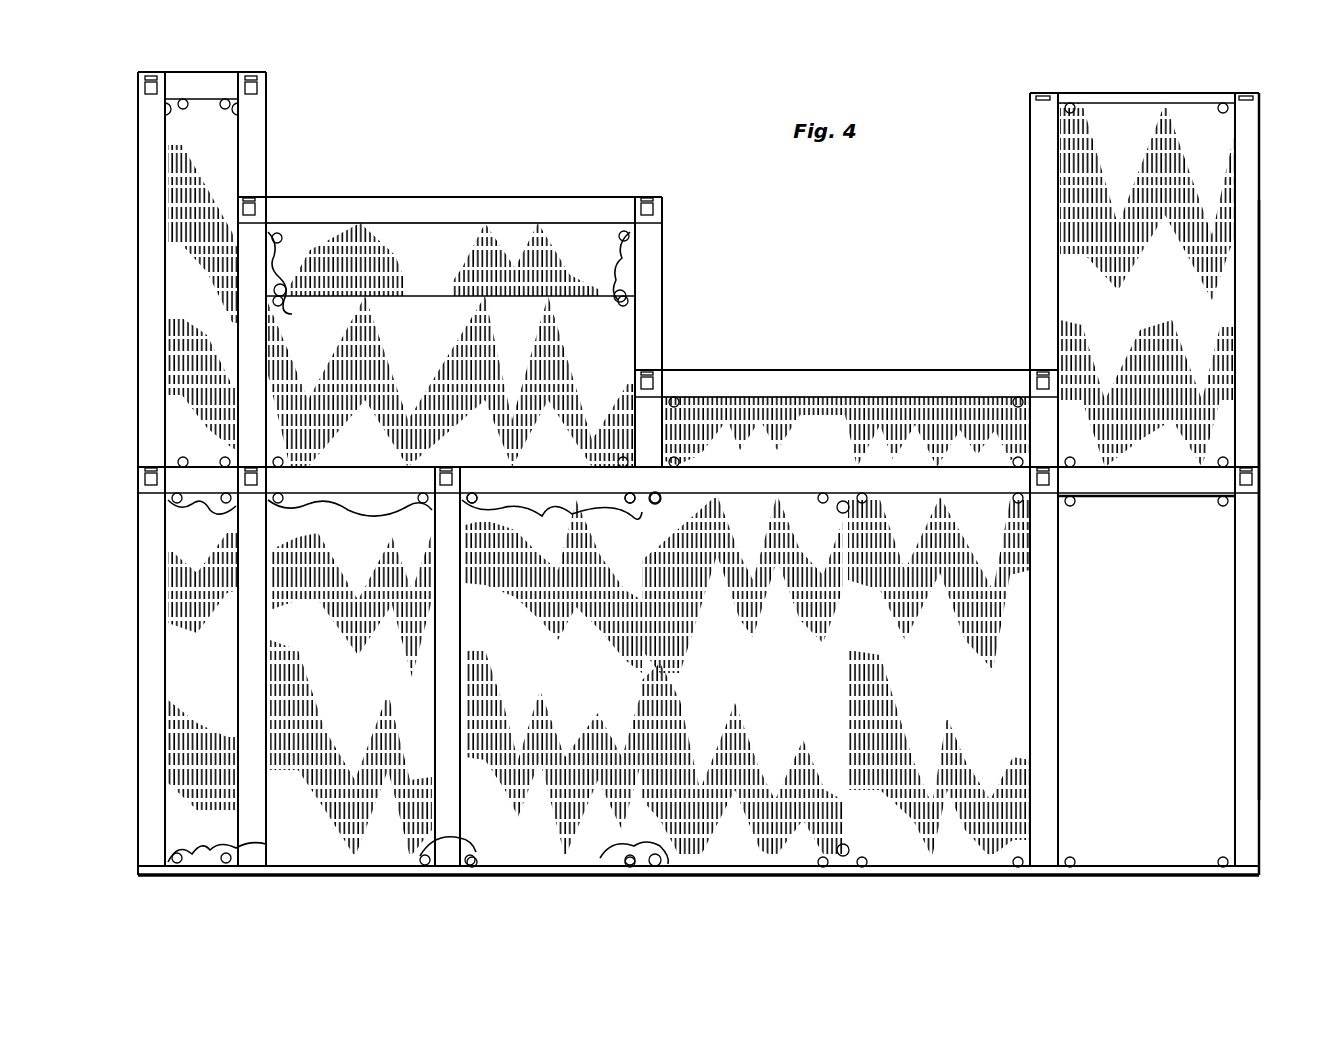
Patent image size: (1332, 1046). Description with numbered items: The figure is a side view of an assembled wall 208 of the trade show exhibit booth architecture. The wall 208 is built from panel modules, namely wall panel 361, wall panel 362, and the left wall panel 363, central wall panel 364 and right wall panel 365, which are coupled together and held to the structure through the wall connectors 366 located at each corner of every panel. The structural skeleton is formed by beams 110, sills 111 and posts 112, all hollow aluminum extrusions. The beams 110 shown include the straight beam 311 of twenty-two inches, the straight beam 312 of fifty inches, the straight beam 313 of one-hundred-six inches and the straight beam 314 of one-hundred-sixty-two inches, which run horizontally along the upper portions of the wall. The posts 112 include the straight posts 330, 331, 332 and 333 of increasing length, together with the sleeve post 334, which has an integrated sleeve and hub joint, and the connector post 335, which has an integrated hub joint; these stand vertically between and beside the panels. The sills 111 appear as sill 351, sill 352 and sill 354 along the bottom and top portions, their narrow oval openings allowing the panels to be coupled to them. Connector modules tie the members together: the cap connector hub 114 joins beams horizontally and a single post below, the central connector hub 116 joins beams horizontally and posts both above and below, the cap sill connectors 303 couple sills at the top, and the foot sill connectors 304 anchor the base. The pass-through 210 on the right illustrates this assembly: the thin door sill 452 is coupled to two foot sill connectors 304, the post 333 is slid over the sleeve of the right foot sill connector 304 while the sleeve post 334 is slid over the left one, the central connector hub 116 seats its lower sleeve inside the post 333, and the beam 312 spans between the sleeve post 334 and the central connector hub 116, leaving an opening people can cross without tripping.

The beams 110 is at (380, 197).
The sills 111 is at (860, 872).
The posts 112 is at (1264, 299).
The cap connector hub 114 is at (260, 71).
The central connector hub 116 is at (264, 200).
The wall 208 is at (462, 224).
The pass-through 210 is at (1133, 698).
The cap sill connectors 303 is at (1032, 92).
The foot sill connectors 304 is at (141, 874).
The straight beam 311 is at (203, 95).
The straight beam 312 is at (352, 467).
The straight beam 313 is at (542, 206).
The straight beam 314 is at (750, 472).
The straight post 330 is at (268, 148).
The straight post 331 is at (664, 290).
The straight post 332 is at (270, 360).
The straight post 333 is at (1264, 362).
The sleeve post 334 is at (138, 655).
The connector post 335 is at (140, 300).
The sill 351 is at (226, 874).
The sill 352 is at (1128, 92).
The sill 354 is at (600, 872).
The wall panel 361 is at (182, 310).
The wall panel 362 is at (414, 368).
The left wall panel 363 is at (548, 685).
The central wall panel 364 is at (740, 685).
The right wall panel 365 is at (923, 685).
The wall connectors 366 is at (418, 548).
The door sill 452 is at (1145, 872).